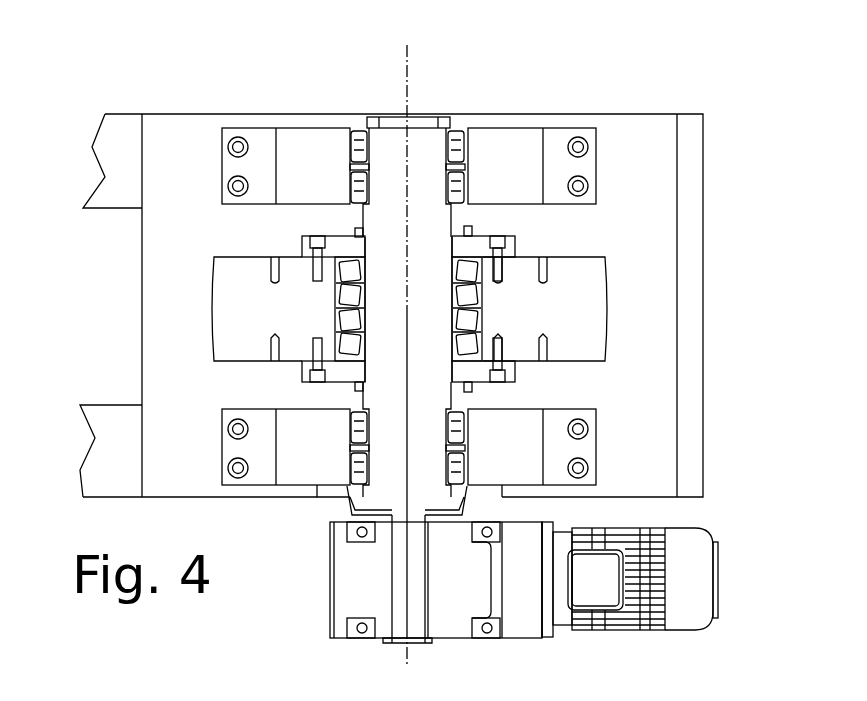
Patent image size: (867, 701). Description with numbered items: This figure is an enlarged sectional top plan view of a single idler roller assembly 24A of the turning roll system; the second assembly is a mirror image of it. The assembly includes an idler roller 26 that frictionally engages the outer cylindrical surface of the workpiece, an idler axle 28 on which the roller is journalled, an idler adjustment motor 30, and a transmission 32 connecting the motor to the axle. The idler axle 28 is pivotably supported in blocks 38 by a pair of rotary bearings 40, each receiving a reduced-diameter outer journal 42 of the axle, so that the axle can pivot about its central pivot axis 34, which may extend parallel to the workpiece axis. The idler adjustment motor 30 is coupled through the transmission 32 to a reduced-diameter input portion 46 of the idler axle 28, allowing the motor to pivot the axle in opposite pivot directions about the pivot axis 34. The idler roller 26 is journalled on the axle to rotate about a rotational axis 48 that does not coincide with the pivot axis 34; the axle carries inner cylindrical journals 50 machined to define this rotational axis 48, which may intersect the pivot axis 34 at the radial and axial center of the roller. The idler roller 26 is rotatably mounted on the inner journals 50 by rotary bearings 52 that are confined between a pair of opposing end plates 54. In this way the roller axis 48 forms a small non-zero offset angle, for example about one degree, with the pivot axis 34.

The first idler roller assembly 24A is at (138, 84).
The idler roller 26 is at (608, 288).
The idler axle 28 is at (378, 584).
The idler adjustment motor 30 is at (708, 530).
The transmission 32 is at (330, 560).
The central pivot axis 34 is at (410, 52).
The blocks 38 is at (497, 128).
The rotary bearings 40 is at (460, 185).
The reduced-diameter outer journal 42 is at (350, 167).
The reduced-diameter input portion 46 is at (428, 560).
The rotational axis 48 is at (405, 70).
The inner cylindrical journals 50 is at (478, 322).
The rotary bearings 52 is at (340, 322).
The end plates 54 is at (480, 237).